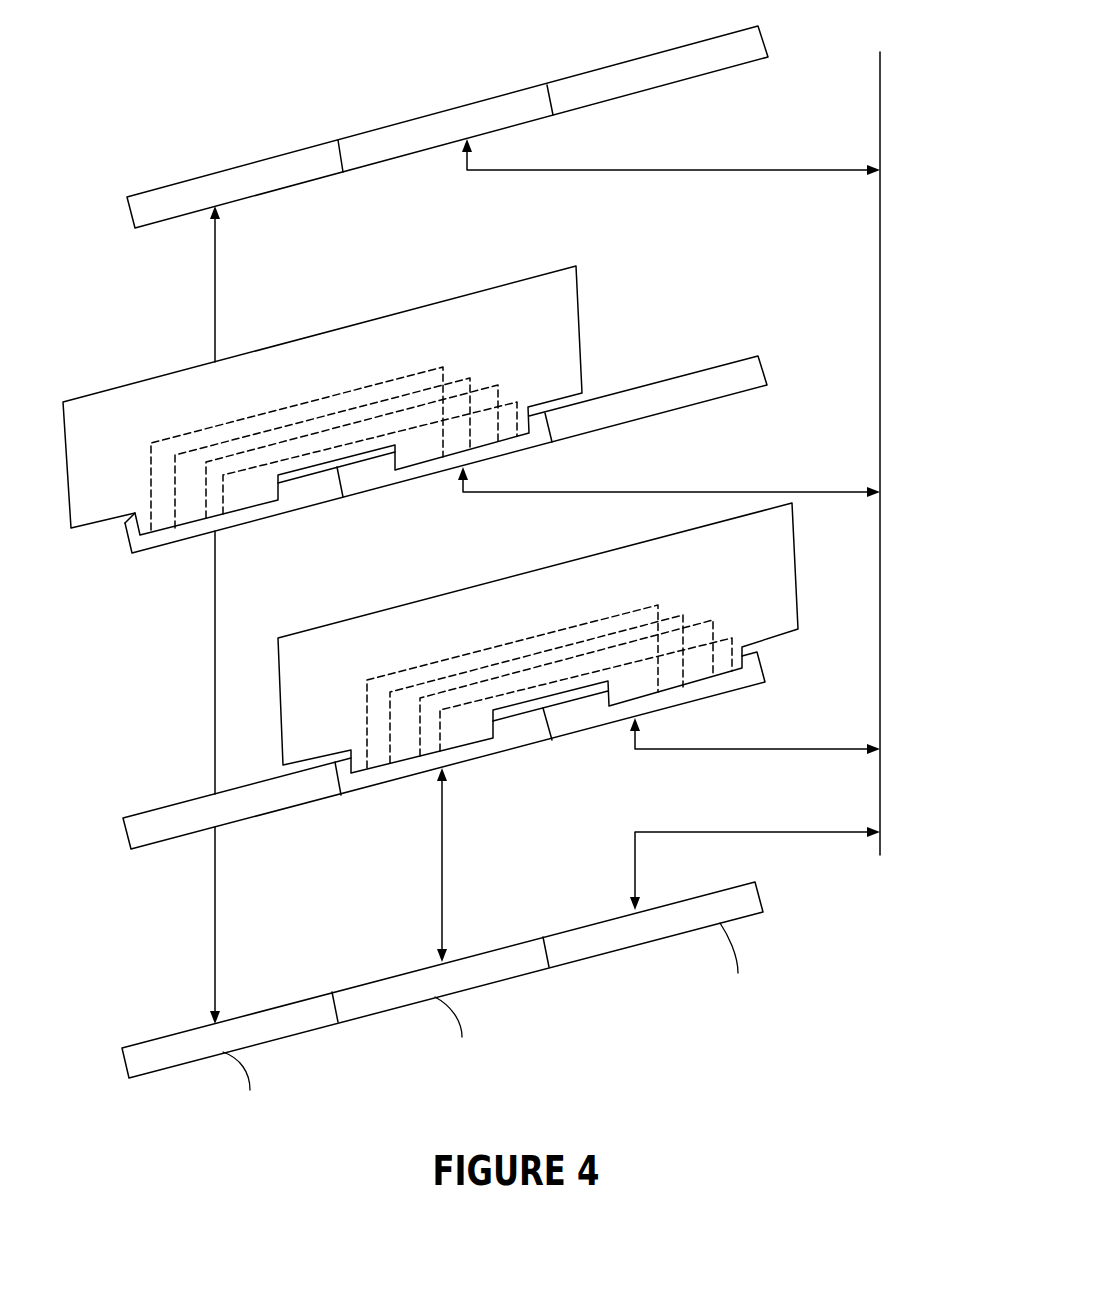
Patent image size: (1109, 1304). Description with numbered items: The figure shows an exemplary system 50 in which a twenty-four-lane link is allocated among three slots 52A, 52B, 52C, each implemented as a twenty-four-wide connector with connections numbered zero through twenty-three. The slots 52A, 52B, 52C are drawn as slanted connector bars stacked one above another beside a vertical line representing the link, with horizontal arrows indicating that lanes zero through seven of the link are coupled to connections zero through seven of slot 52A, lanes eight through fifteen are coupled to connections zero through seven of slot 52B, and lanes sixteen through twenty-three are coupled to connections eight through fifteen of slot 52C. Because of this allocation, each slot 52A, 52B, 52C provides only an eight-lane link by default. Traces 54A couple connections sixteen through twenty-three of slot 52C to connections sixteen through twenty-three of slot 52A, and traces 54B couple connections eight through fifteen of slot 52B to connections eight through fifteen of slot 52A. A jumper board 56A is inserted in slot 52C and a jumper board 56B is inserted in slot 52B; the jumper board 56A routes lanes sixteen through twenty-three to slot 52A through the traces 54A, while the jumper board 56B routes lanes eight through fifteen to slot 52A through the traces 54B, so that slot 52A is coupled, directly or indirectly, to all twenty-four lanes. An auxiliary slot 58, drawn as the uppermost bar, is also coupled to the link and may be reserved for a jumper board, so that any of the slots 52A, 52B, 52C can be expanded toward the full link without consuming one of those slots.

The exemplary system 50 is at (193, 70).
The auxiliary slot 58 is at (445, 110).
The jumper board 56A is at (343, 327).
The jumper board 56B is at (485, 582).
The slot 52A is at (774, 885).
The slot 52B is at (774, 659).
The slot 52C is at (774, 361).
The traces 54A is at (215, 660).
The traces 54B is at (442, 868).